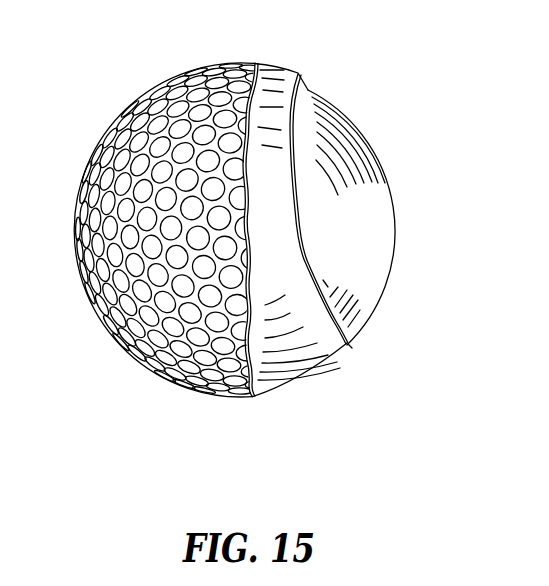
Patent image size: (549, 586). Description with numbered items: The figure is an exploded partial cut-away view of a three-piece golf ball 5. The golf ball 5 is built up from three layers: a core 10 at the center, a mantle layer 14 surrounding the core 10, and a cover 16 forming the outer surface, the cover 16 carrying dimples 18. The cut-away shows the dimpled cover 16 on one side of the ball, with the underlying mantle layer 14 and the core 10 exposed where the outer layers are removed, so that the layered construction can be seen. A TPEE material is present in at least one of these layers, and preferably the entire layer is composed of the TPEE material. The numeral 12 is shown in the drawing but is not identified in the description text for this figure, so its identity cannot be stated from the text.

The three-piece golf ball 5 is at (420, 137).
The core 10 is at (363, 288).
The intermediate mantle layer 12 is at (294, 77).
The mantle layer 14 is at (316, 361).
The cover 16 is at (110, 324).
The dimples 18 is at (126, 112).